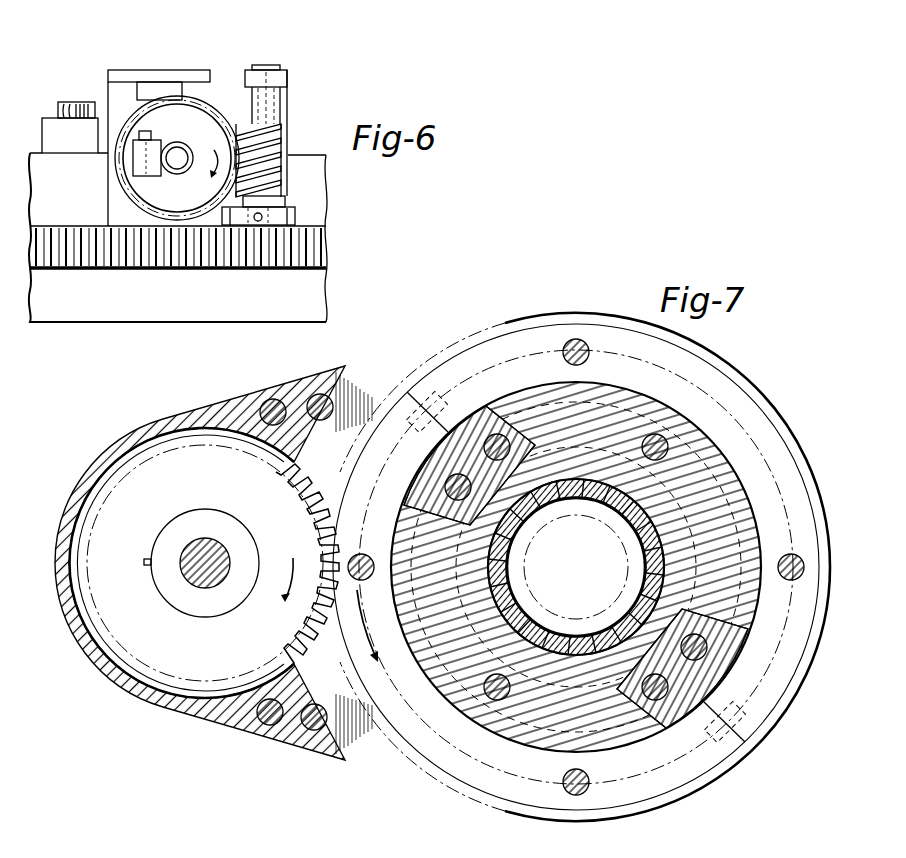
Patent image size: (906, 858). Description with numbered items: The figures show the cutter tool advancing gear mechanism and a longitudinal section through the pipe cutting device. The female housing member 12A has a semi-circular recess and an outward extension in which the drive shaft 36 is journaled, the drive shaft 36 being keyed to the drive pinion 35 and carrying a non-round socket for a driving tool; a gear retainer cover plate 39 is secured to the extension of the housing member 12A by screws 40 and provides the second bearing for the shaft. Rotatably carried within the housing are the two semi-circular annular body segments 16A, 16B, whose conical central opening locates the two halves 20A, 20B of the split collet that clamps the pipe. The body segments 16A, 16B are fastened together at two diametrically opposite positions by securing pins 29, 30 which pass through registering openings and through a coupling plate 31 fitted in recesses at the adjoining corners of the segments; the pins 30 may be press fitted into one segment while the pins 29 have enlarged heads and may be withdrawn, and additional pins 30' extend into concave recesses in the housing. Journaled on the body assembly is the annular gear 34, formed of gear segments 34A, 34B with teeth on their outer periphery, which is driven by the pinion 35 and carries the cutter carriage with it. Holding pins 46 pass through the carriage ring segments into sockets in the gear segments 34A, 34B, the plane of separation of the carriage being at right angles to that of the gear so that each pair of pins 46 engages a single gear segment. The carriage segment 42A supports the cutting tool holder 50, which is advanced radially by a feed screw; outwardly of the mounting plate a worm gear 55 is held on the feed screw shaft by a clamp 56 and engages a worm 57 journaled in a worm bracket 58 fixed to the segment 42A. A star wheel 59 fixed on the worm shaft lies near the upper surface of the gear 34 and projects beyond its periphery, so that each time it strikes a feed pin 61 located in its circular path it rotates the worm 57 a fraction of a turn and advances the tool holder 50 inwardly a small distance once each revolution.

In FIG. 6, the cutting tool holder 50 is at (141, 71).
In FIG. 6, the worm gear 55 is at (208, 113).
In FIG. 6, the worm bracket 58 is at (283, 70).
In FIG. 6, the worm 57 is at (275, 122).
In FIG. 6, the cutter carriage segment 42A is at (312, 160).
In FIG. 6, the star wheel 59 is at (296, 215).
In FIG. 6, the annular gear 34 is at (323, 247).
In FIG. 6, the female housing member 12A is at (315, 297).
In FIG. 6, the clamp 56 is at (170, 190).
In FIG. 7, the holding pins 46 is at (582, 340).
In FIG. 7, the gear retainer cover plate 39 is at (132, 430).
In FIG. 7, the screws 40 is at (271, 398).
In FIG. 7, the feed pins 61 is at (330, 404).
In FIG. 7, the coupling plate 31 is at (464, 416).
In FIG. 7, the securing pins 30 is at (576, 564).
In FIG. 7, the securing pins 29 is at (446, 483).
In FIG. 7, the additional pins 30' is at (585, 569).
In FIG. 7, the annular body segment 16B is at (712, 453).
In FIG. 7, the gear segment 34B is at (812, 492).
In FIG. 7, the collet half 20B is at (630, 537).
In FIG. 7, the collet half 20A is at (528, 603).
In FIG. 7, the drive shaft 36 is at (205, 616).
In FIG. 7, the drive pinion 35 is at (130, 632).
In FIG. 7, the annular body segment 16A is at (440, 686).
In FIG. 7, the gear segment 34A is at (510, 806).